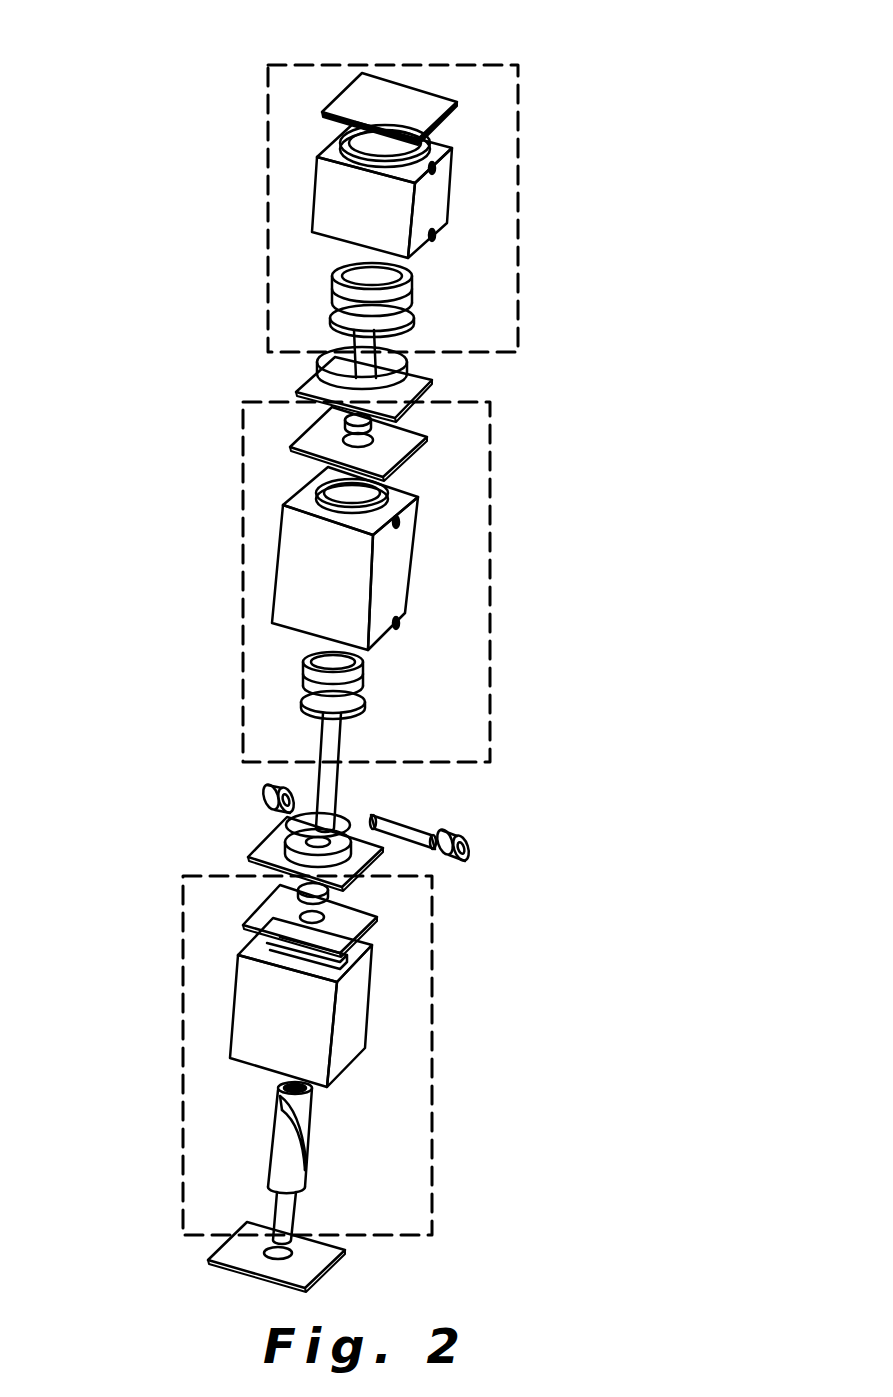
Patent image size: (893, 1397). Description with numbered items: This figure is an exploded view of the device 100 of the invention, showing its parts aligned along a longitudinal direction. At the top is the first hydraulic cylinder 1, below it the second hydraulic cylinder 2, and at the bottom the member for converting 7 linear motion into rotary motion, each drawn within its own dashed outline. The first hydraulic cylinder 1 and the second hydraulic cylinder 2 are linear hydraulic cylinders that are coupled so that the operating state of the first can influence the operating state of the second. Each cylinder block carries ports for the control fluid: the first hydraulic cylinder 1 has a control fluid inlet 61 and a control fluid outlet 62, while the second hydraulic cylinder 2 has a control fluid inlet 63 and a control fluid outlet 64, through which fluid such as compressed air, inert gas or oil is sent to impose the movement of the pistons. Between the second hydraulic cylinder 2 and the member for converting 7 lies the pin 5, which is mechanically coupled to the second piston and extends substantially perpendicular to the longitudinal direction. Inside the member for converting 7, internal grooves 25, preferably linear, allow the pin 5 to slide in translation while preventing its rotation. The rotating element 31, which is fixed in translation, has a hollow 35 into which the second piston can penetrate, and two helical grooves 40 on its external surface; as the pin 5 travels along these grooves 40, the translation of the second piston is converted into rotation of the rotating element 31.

The device 100 is at (190, 54).
The first hydraulic cylinder 1 is at (518, 218).
The second hydraulic cylinder 2 is at (490, 598).
The member for converting 7 is at (433, 1028).
The pin 5 is at (408, 822).
The internal grooves 25 is at (373, 942).
The rotating element 31 is at (278, 1167).
The hollow 35 is at (285, 1085).
The grooves 40 is at (292, 1128).
The control fluid inlet 61 is at (435, 168).
The control fluid outlet 62 is at (435, 235).
The control fluid inlet 63 is at (398, 522).
The control fluid outlet 64 is at (398, 623).